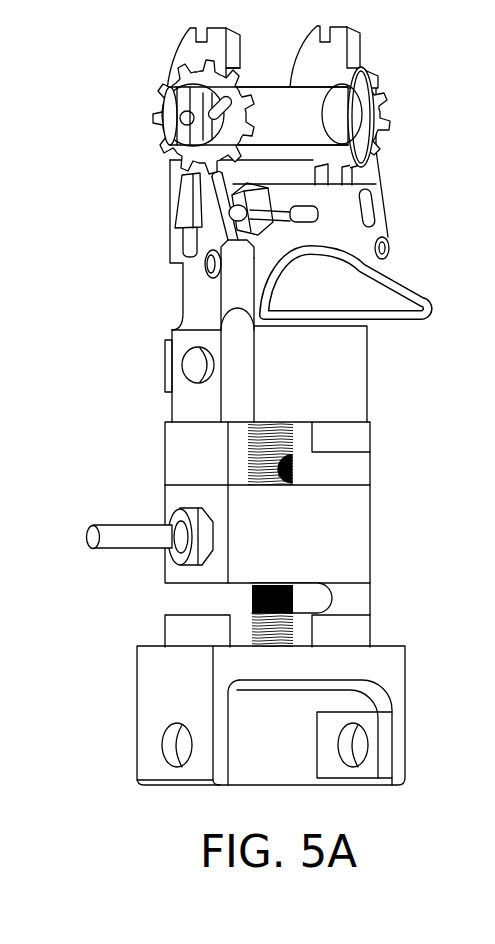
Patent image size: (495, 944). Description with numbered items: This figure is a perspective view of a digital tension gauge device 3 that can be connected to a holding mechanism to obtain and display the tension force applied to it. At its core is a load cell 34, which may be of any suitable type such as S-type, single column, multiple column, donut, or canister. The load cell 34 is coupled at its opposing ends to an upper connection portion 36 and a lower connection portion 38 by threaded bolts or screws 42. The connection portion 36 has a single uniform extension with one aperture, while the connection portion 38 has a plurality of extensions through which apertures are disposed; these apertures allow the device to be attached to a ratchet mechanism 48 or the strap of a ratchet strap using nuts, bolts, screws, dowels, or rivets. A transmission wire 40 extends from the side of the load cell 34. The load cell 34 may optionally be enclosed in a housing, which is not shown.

The tension gauge device 3 is at (157, 372).
The load cell 34 is at (362, 525).
The connection portion 36 is at (352, 373).
The connection portion 38 is at (390, 681).
The transmission wire 40 is at (123, 535).
The threaded bolts or screws 42 is at (292, 463).
The ratchet mechanism 48 is at (343, 110).